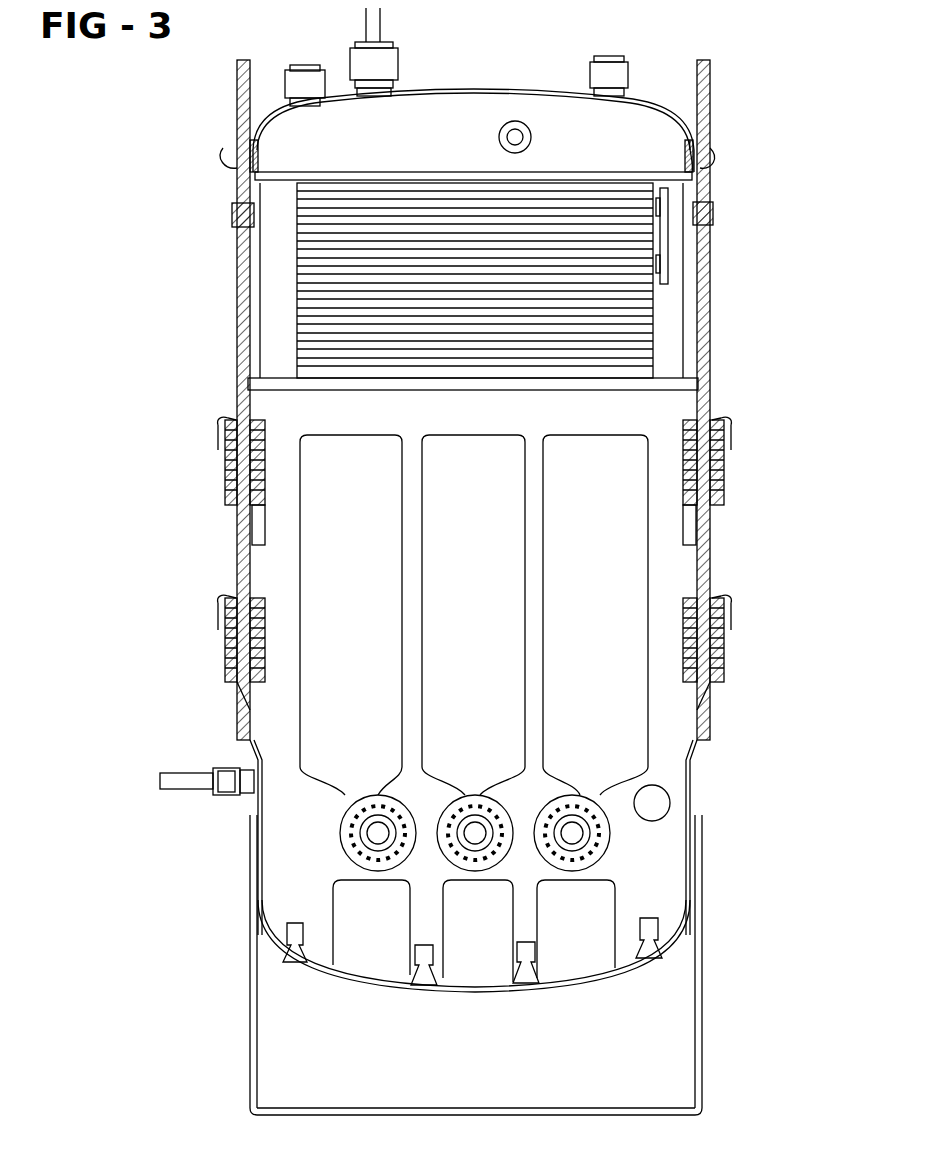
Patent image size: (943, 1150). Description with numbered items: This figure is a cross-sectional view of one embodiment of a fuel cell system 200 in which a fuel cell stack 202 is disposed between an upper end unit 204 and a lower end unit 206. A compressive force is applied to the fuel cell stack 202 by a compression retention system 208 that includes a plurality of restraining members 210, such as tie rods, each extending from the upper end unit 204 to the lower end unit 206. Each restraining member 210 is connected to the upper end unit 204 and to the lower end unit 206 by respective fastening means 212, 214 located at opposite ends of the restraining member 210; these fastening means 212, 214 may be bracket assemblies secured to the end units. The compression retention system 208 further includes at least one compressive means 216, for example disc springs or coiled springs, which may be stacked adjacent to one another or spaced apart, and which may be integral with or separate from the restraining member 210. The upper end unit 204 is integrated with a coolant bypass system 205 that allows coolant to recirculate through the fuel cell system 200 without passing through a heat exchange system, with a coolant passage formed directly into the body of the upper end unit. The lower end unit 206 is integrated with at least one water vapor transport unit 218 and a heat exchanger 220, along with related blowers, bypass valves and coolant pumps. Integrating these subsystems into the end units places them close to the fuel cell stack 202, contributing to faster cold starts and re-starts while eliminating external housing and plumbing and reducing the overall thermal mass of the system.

The fuel cell system 200 is at (195, 106).
The fuel cell stack 202 is at (300, 290).
The upper end unit 204 is at (476, 84).
The coolant bypass system 205 is at (517, 125).
The lower end unit 206 is at (668, 868).
The compression retention system 208 is at (722, 240).
The restraining member 210 is at (712, 318).
The fastening means 212 is at (660, 100).
The fastening means 214 is at (728, 600).
The compressive means 216 is at (224, 625).
The water vapor transport unit 218 is at (300, 752).
The heat exchanger 220 is at (340, 828).